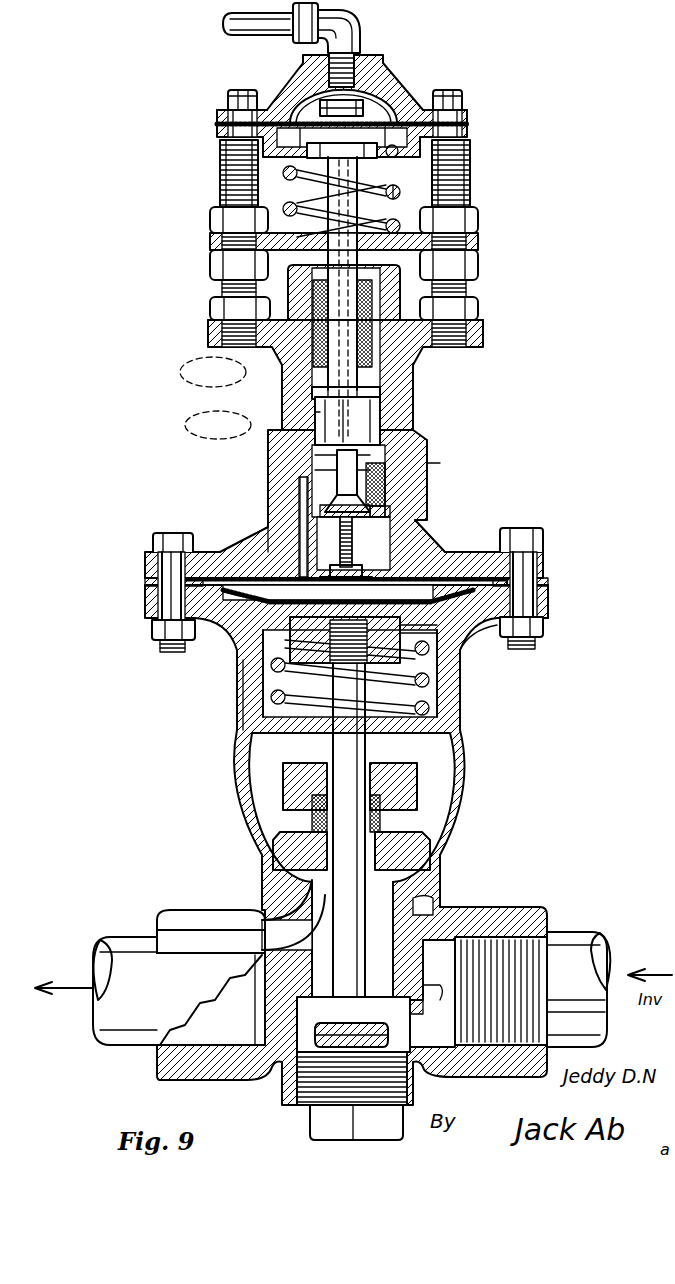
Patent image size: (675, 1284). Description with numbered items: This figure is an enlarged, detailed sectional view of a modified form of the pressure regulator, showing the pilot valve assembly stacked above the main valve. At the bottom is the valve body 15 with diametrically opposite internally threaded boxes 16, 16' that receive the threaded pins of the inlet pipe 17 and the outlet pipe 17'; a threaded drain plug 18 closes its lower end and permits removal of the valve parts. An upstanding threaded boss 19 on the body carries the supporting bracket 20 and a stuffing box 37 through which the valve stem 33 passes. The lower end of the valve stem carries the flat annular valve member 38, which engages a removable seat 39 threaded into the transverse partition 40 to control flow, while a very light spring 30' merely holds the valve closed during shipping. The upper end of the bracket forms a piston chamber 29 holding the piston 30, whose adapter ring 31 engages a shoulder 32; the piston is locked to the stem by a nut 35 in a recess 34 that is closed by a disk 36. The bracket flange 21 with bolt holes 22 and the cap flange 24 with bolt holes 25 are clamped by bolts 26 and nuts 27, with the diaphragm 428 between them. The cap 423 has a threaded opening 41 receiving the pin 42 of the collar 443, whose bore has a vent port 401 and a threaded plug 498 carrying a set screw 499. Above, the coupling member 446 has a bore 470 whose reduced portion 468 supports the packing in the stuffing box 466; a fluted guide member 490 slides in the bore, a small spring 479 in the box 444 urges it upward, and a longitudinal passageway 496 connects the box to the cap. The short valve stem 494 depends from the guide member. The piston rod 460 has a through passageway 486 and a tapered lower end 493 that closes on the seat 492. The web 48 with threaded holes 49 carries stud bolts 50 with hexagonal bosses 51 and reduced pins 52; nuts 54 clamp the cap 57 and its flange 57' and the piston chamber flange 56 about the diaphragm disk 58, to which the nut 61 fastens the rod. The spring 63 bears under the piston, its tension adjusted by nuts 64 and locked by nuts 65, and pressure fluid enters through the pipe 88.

The valve body 15 is at (440, 905).
The internally screw-threaded box 16 is at (495, 957).
The internally screw-threaded box 16' is at (182, 1001).
The inlet pipe 17 is at (609, 989).
The outlet or discharge pipe 17' is at (96, 991).
The drain or cleanout plug 18 is at (310, 1125).
The boss 19 is at (280, 915).
The supporting bracket 20 is at (470, 760).
The external flange 21 is at (550, 603).
The bolt holes 22 is at (548, 585).
The flange 24 is at (547, 556).
The bolt holes 25 is at (548, 568).
The bolts 26 is at (150, 540).
The nuts 27 is at (150, 635).
The piston chamber 29 is at (430, 693).
The piston 30 is at (318, 673).
The spring 30' is at (214, 695).
The adapter ring 31 is at (490, 640).
The shoulder 32 is at (215, 635).
The valve stem 33 is at (333, 740).
The sump or recess 34 is at (405, 640).
The nut 35 is at (440, 662).
The plate or disk 36 is at (346, 591).
The stuffing box 37 is at (395, 775).
The valve member 38 is at (390, 1032).
The seat 39 is at (400, 1002).
The transverse partition 40 is at (432, 993).
The screw-threaded opening 41 is at (470, 537).
The pin 42 is at (420, 535).
The supporting web or bracket 48 is at (425, 368).
The bolt holes 49 is at (470, 345).
The stud bolts 50 is at (220, 185).
The hexagonal boss 51 is at (212, 305).
The pin 52 is at (250, 90).
The nuts 54 is at (228, 100).
The flange 56 is at (262, 148).
The crown or cap 57 is at (342, 96).
The flange 57' is at (303, 112).
The diaphragm disk 58 is at (217, 125).
The nut 61 is at (365, 105).
The coiled spring 63 is at (385, 185).
The nuts 64 is at (344, 273).
The nuts 65 is at (344, 220).
The pipe 88 is at (223, 26).
The vent port or passageway 401 is at (395, 512).
The cap 423 is at (230, 540).
The diaphragm 428 is at (125, 580).
The collar 443 is at (395, 488).
The box 444 is at (420, 472).
The coupling member 446 is at (414, 392).
The piston rod 460 is at (328, 197).
The stuffing box 466 is at (275, 285).
The reduced portion 468 is at (320, 392).
The bore 470 is at (425, 462).
The coiled spring 479 is at (330, 458).
The passageway 486 is at (282, 380).
The guide member 490 is at (385, 408).
The valve seat 492 is at (315, 420).
The tapered lower end 493 is at (315, 410).
The valve stem 494 is at (330, 495).
The longitudinal passageway 496 is at (298, 502).
The plug 498 is at (370, 559).
The stop or set screw 499 is at (388, 589).